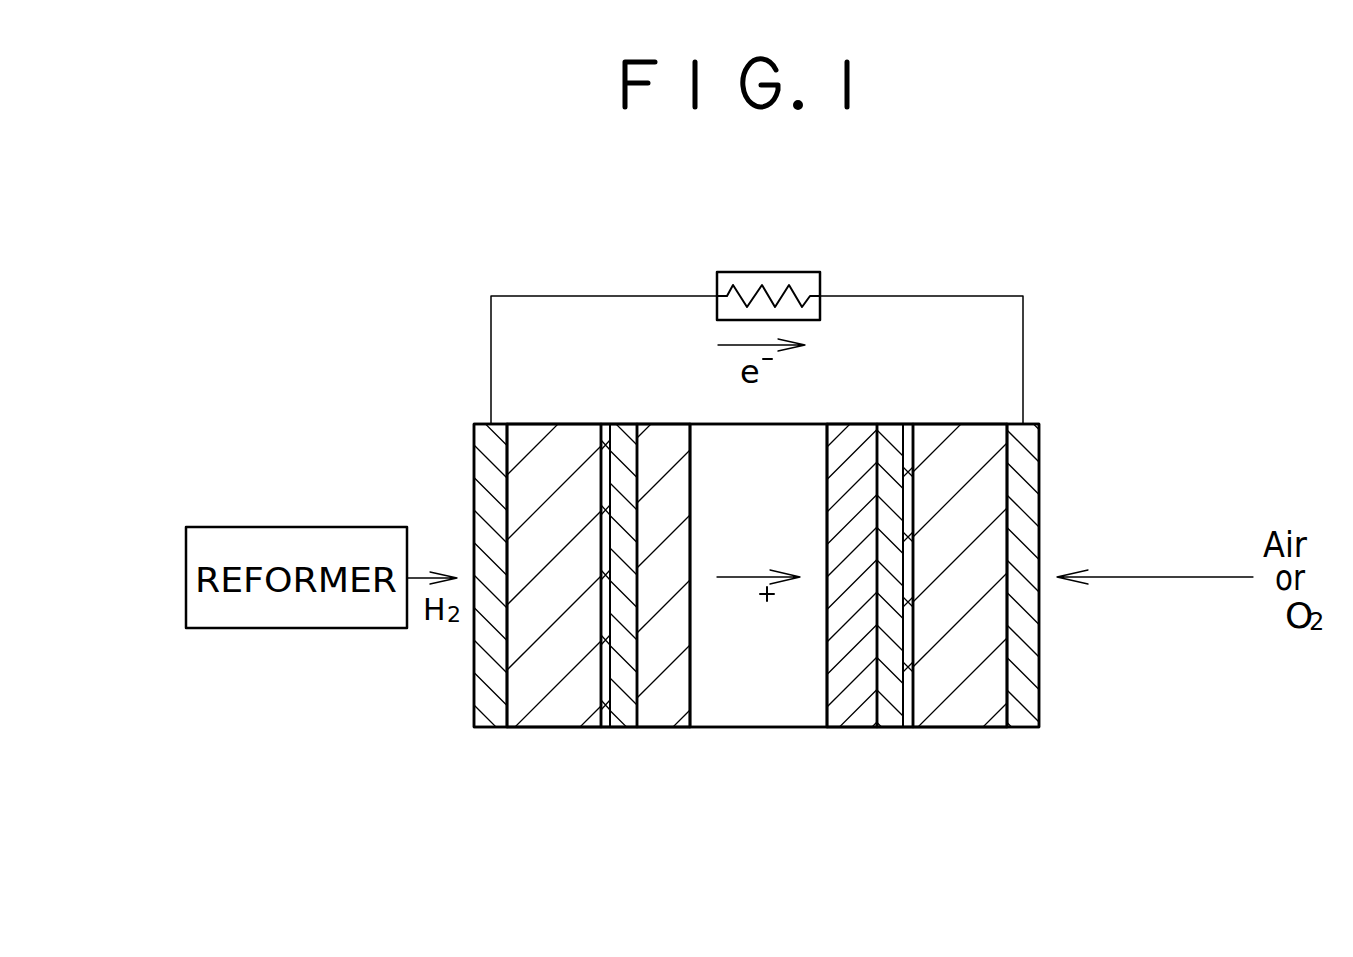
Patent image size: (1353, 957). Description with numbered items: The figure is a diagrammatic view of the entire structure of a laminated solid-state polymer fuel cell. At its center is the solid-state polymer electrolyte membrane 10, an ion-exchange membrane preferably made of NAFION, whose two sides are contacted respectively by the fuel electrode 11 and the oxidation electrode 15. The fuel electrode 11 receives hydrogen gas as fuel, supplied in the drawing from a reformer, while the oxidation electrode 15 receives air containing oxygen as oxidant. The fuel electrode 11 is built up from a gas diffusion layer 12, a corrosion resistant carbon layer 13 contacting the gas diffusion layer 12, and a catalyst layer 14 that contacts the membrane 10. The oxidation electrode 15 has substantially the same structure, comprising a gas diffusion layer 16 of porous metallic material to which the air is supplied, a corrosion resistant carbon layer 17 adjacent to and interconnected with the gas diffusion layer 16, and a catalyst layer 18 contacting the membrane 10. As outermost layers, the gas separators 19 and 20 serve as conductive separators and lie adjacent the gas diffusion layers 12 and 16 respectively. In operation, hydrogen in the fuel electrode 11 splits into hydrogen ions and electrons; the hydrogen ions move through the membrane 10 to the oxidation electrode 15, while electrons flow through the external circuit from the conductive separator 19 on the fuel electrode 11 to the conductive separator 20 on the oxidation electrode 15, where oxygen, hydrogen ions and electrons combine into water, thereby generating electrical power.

The solid-state polymer electrolyte membrane 10 is at (762, 728).
The fuel electrode 11 is at (725, 813).
The gas diffusion layer 12 is at (540, 728).
The corrosion resistant carbon layer 13 is at (612, 728).
The catalyst layer 14 is at (673, 728).
The oxidation electrode 15 is at (1025, 813).
The gas diffusion layer 16 is at (973, 728).
The corrosion resistant carbon layer 17 is at (890, 728).
The catalyst layer 18 is at (832, 728).
The conductive separator 19 is at (480, 728).
The conductive separator 20 is at (1020, 728).